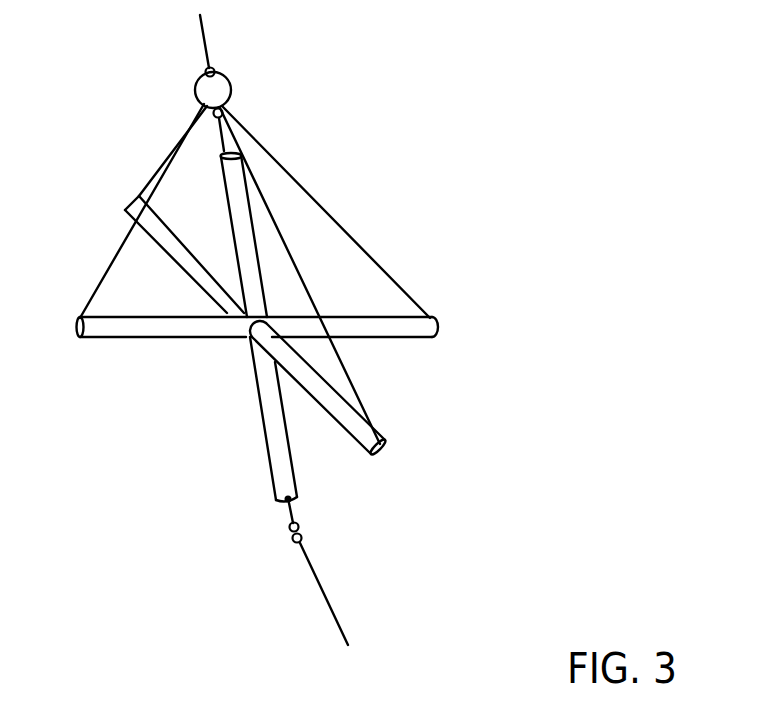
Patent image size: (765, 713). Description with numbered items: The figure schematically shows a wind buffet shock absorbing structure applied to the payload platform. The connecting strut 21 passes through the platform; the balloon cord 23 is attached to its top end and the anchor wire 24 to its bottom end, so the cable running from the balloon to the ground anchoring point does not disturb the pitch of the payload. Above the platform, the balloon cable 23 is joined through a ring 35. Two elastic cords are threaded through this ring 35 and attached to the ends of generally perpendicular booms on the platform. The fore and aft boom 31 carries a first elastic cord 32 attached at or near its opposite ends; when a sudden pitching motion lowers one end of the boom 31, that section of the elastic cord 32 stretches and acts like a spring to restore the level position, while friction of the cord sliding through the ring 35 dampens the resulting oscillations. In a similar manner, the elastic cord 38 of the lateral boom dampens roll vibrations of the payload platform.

The connecting strut 21 is at (262, 418).
The cord 23 is at (207, 35).
The anchor wire 24 is at (321, 584).
The boom 31 is at (120, 340).
The elastic cord 32 is at (121, 246).
The ring 35 is at (233, 88).
The elastic cord 38 is at (152, 165).